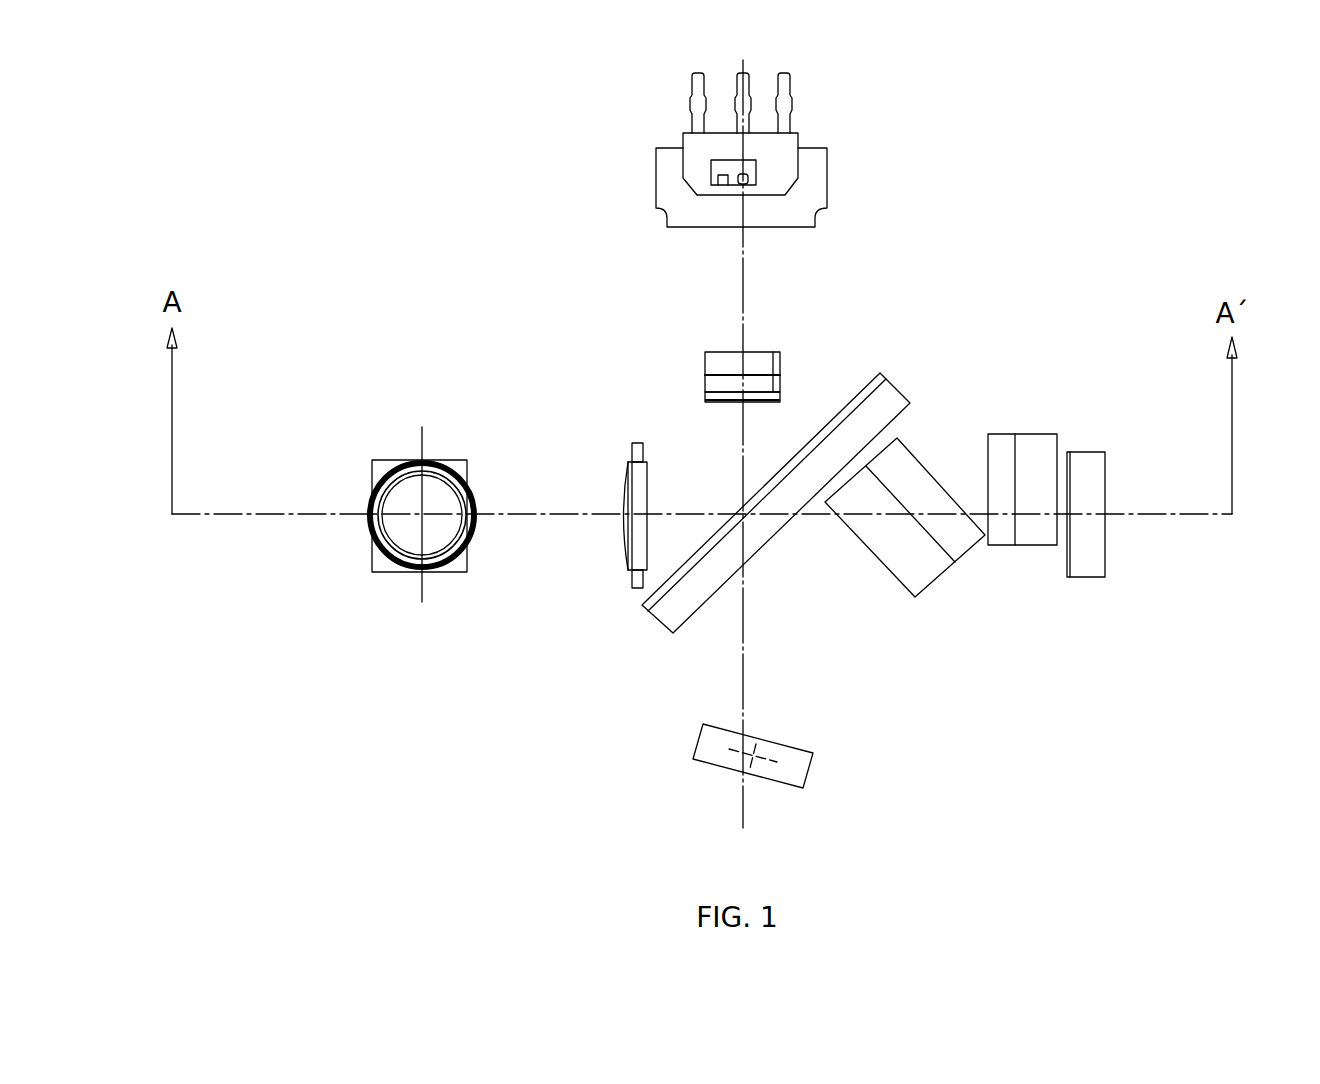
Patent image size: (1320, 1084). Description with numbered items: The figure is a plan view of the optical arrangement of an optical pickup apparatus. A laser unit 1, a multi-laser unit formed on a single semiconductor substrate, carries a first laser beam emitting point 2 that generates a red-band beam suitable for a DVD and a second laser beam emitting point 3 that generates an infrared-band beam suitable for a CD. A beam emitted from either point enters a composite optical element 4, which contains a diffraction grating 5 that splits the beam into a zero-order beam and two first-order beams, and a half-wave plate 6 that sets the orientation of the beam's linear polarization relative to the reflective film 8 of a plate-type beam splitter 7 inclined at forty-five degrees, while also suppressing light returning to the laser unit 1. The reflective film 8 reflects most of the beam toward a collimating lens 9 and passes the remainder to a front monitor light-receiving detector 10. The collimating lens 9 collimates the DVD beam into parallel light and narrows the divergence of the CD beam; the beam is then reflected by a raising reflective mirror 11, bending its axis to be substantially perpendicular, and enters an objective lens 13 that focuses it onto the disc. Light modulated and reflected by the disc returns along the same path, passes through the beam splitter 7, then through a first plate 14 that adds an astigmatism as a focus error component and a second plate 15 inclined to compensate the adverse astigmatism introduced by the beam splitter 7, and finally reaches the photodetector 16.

The laser unit 1 is at (827, 170).
The first laser beam emitting point 2 is at (745, 185).
The second laser beam emitting point 3 is at (722, 185).
The composite optical element 4 is at (736, 368).
The diffraction grating 5 is at (765, 403).
The half-wave plate 6 is at (780, 378).
The beam splitter 7 is at (776, 544).
The reflective film 8 is at (692, 553).
The collimating lens 9 is at (650, 463).
The front monitor light-receiving detector 10 is at (793, 748).
The raising reflective mirror 11 is at (452, 460).
The objective lens 13 is at (392, 460).
The first plate 14 is at (940, 580).
The second plate 15 is at (1020, 547).
The photodetector 16 is at (1082, 578).